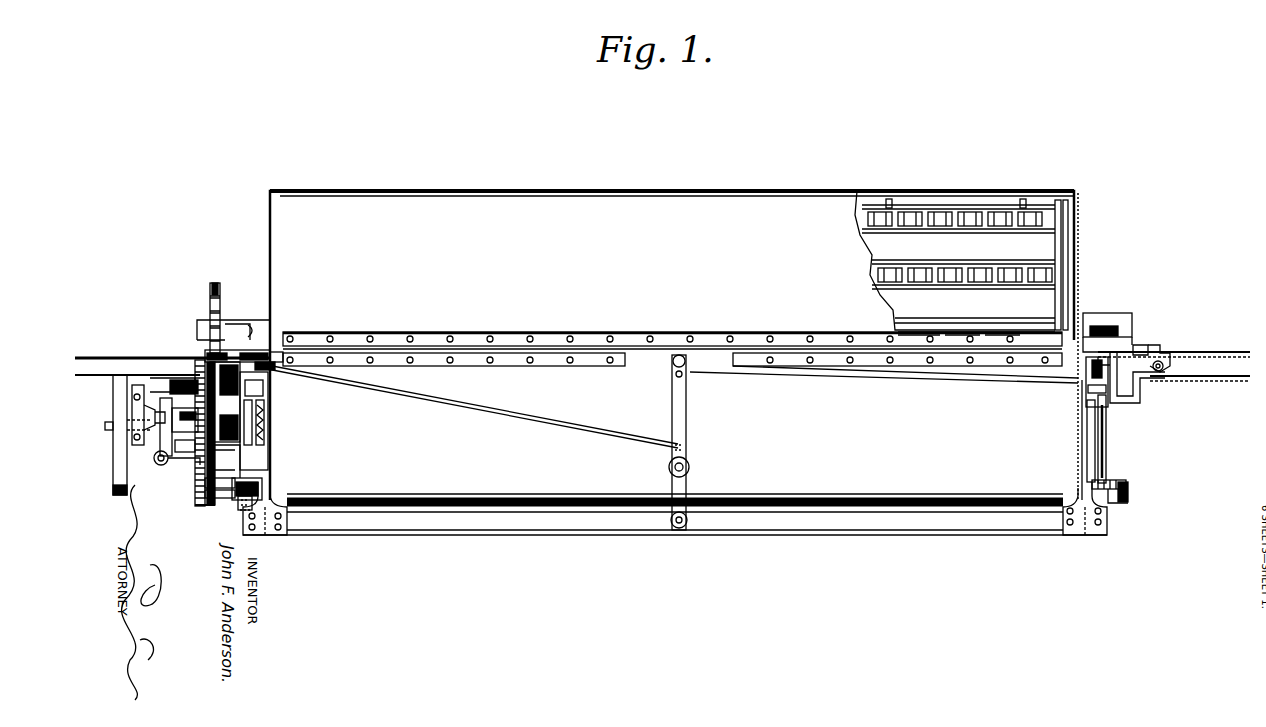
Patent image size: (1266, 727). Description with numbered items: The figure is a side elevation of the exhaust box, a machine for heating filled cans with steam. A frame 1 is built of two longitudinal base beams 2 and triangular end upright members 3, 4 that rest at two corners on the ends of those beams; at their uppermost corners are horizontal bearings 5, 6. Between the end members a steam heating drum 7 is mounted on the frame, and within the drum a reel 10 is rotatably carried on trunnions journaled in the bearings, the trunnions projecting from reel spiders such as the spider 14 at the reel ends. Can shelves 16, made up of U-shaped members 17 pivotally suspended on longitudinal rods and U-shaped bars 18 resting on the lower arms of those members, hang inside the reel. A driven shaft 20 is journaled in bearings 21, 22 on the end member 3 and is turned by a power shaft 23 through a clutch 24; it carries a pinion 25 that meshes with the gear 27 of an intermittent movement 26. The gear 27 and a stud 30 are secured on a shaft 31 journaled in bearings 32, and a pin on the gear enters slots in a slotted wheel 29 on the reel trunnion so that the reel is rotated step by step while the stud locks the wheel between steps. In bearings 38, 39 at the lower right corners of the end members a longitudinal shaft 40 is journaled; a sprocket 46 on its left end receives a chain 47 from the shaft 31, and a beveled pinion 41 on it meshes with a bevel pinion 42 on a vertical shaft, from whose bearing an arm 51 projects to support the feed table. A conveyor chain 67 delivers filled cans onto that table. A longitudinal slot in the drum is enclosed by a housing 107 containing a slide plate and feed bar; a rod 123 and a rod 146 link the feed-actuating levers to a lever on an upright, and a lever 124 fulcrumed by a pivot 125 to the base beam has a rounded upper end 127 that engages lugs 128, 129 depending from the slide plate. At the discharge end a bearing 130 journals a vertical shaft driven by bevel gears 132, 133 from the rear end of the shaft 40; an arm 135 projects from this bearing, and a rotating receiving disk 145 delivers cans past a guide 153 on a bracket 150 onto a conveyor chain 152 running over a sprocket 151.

The frame 1 is at (675, 545).
The longitudinal base beams 2 is at (822, 512).
The end upright member 3 is at (266, 404).
The end upright member 4 is at (1093, 437).
The horizontal bearing 5 is at (240, 320).
The horizontal bearing 6 is at (1123, 322).
The steam heating drum 7 is at (635, 215).
The reel 10 is at (955, 263).
The reel spider 14 is at (1067, 250).
The can shelves 16 is at (958, 263).
The U-shaped members 17 is at (1057, 228).
The U-shaped bars 18 is at (898, 228).
The driven shaft 20 is at (213, 433).
The bearing 21 is at (268, 435).
The bearing 22 is at (183, 425).
The power shaft 23 is at (110, 430).
The clutch 24 is at (168, 388).
The pinion 25 is at (196, 460).
The intermittent movement 26 is at (201, 318).
The gear 27 is at (272, 349).
The slotted wheel 29 is at (213, 282).
The stud 30 is at (212, 356).
The shaft 31 is at (157, 384).
The bearings 32 is at (163, 393).
The bearing 38 is at (270, 537).
The bearing 39 is at (1082, 535).
The shaft 40 is at (960, 506).
The beveled pinion 41 is at (238, 500).
The bevel pinion 42 is at (262, 485).
The sprocket 46 is at (200, 510).
The chain 47 is at (195, 486).
The arm 51 is at (262, 441).
The conveyor chain 67 is at (93, 358).
The housing 107 is at (570, 346).
The rod 123 is at (534, 414).
The lever 124 is at (683, 438).
The pivot 125 is at (679, 528).
The rounded upper end 127 is at (676, 372).
The lug 128 is at (672, 362).
The lug 129 is at (690, 360).
The bearing 130 is at (1106, 458).
The bevel gear 132 is at (1120, 482).
The bevel gear 133 is at (1128, 496).
The arm 135 is at (1085, 410).
The receiving table or disk 145 is at (1133, 345).
The rod 146 is at (852, 370).
The bracket 150 is at (1136, 392).
The sprocket 151 is at (1164, 362).
The conveyor chain 152 is at (1200, 391).
The guide 153 is at (1160, 345).